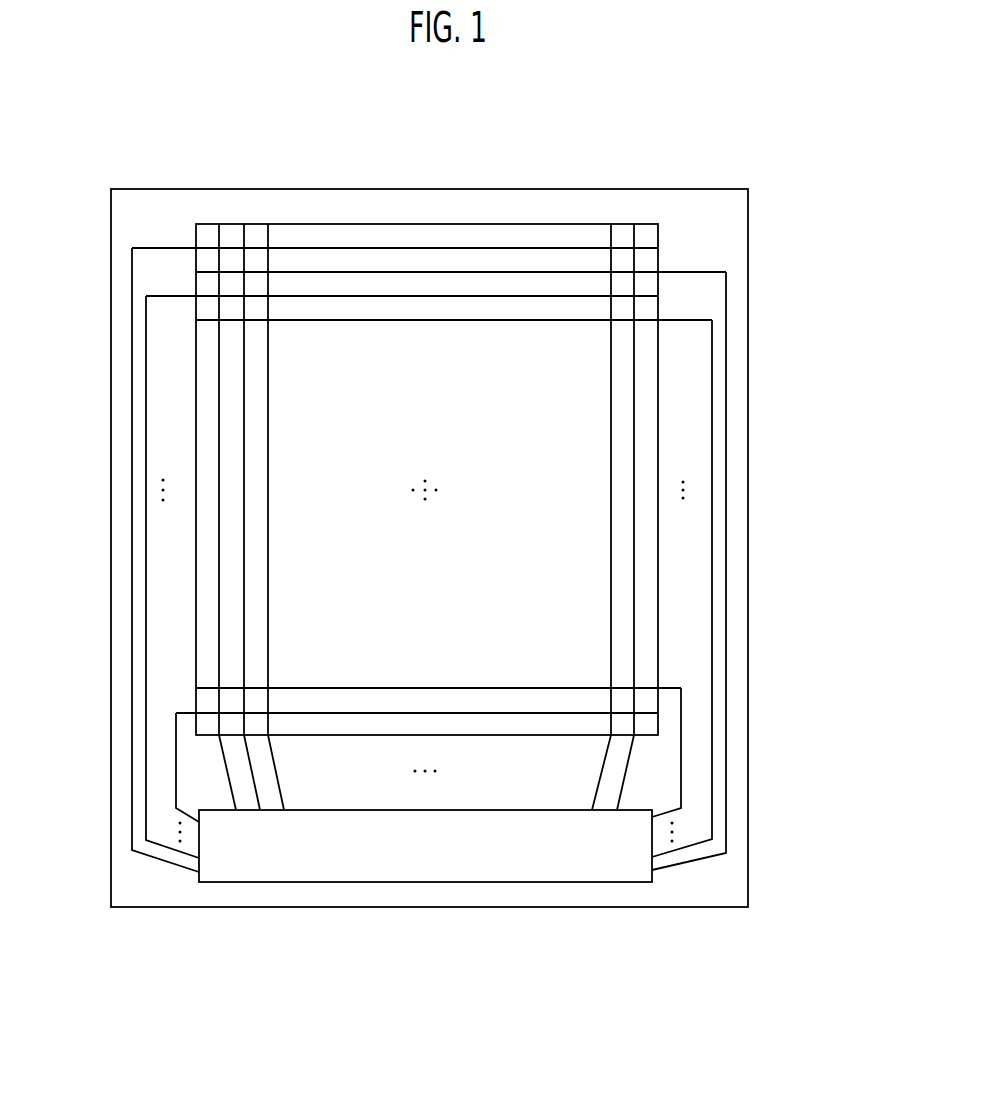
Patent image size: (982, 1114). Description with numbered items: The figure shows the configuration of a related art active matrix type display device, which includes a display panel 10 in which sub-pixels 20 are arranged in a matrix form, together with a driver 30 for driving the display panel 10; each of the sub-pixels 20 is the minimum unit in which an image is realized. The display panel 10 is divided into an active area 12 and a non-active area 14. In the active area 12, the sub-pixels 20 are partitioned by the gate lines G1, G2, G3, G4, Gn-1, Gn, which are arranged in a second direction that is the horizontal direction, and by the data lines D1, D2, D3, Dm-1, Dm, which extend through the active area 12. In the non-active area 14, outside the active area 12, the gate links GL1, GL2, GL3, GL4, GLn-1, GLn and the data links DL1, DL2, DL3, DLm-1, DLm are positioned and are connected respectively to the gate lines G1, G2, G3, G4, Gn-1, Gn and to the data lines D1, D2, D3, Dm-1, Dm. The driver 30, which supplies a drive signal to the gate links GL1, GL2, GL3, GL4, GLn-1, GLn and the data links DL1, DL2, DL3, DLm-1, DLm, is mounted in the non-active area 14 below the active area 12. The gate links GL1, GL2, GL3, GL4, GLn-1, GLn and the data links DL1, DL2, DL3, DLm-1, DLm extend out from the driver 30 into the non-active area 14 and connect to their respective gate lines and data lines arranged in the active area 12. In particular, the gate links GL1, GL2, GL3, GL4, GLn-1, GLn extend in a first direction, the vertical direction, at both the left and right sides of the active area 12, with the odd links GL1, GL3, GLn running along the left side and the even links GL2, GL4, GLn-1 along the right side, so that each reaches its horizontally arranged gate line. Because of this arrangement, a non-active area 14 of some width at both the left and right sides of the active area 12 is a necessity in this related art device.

The display panel 10 is at (475, 520).
The active area 12 is at (495, 434).
The non-active area 14 is at (748, 460).
The sub-pixels 20 is at (211, 238).
The driver 30 is at (400, 882).
The gate line G1 is at (329, 248).
The gate line G2 is at (402, 272).
The gate line G3 is at (493, 297).
The gate line G4 is at (493, 320).
The gate line Gn-1 is at (297, 688).
The gate line Gn is at (380, 713).
The gate link GL1 is at (132, 329).
The gate link GL2 is at (726, 297).
The gate link GL3 is at (146, 368).
The gate link GL4 is at (712, 358).
The gate link GLn-1 is at (681, 760).
The gate link GLn is at (176, 760).
The data line D1 is at (219, 555).
The data line D2 is at (244, 597).
The data line D3 is at (268, 645).
The data line Dm-1 is at (611, 557).
The data line Dm is at (634, 590).
The data link DL1 is at (212, 772).
The data link DL2 is at (258, 772).
The data link DL3 is at (286, 772).
The data link DLm-1 is at (576, 772).
The data link DLm is at (637, 772).